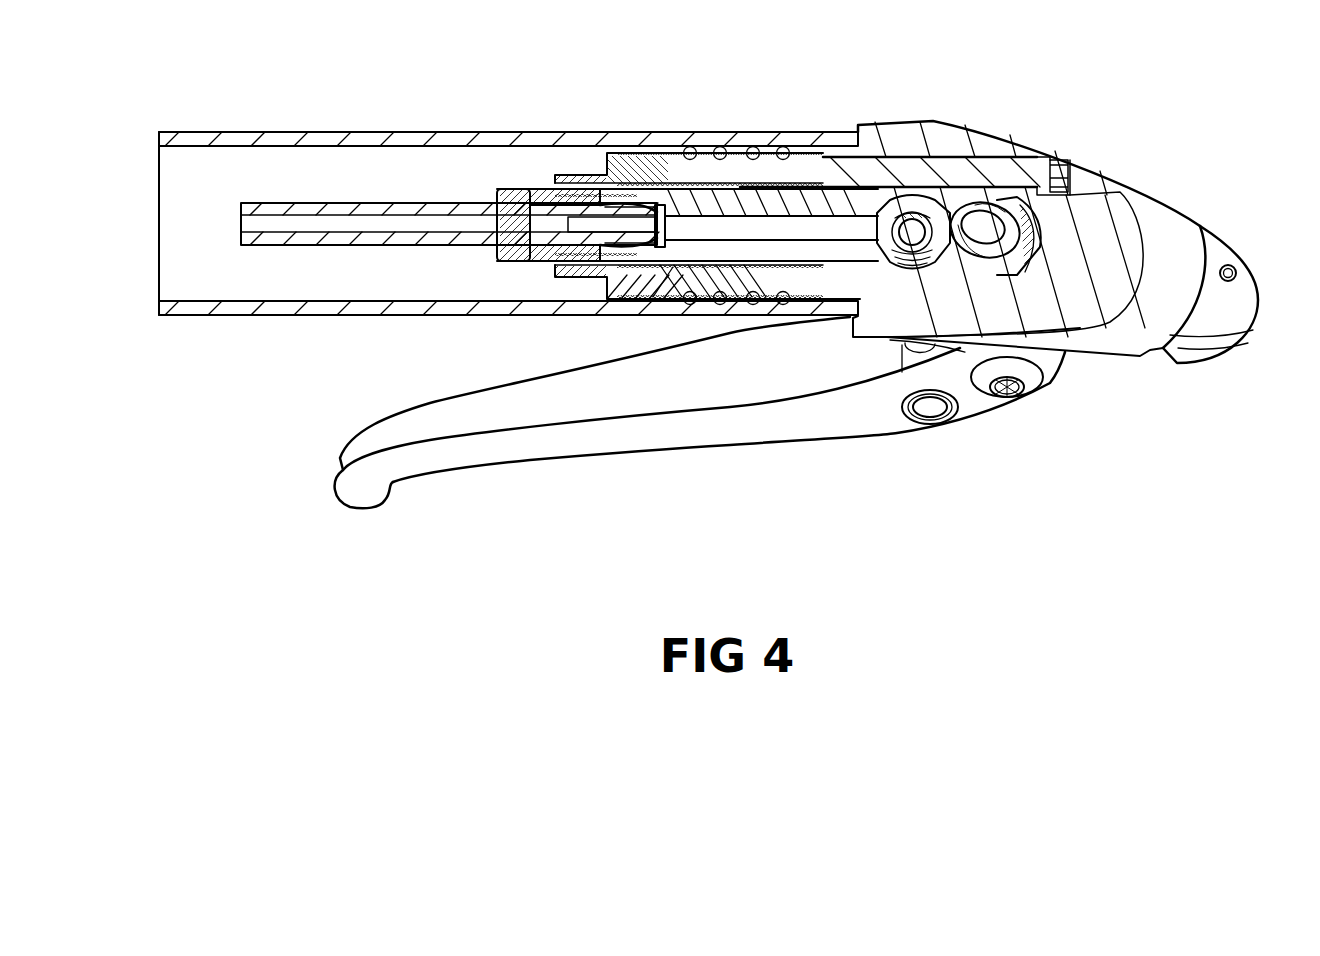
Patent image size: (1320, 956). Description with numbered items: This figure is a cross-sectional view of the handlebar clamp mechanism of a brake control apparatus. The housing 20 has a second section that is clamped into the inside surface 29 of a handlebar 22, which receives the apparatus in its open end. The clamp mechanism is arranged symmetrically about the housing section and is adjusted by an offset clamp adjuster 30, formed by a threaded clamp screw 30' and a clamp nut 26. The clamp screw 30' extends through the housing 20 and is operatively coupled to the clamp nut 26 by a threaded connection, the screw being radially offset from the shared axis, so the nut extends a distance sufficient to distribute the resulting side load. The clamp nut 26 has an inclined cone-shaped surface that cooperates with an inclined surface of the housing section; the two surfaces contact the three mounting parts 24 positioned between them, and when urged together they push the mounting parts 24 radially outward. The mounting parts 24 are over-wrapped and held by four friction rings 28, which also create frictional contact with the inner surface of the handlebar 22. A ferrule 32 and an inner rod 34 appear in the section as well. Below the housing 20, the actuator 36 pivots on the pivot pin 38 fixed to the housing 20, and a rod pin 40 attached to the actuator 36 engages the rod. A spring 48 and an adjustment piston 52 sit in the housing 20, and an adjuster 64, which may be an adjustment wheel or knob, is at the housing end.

The housing 20 is at (1102, 230).
The handlebar 22 is at (483, 137).
The mounting parts 24 is at (715, 279).
The clamp nut 26 is at (622, 279).
The friction rings 28 is at (775, 148).
The inside surface 29 is at (188, 298).
The clamp adjuster 30 is at (699, 182).
The clamp screw 30' is at (905, 141).
The ferrule 32 is at (638, 203).
The inner rod 34 is at (333, 231).
The actuator 36 is at (507, 443).
The pivot pin 38 is at (1012, 388).
The rod pin 40 is at (922, 413).
The spring 48 is at (907, 243).
The adjustment piston 52 is at (998, 235).
The adjuster 64 is at (1237, 252).